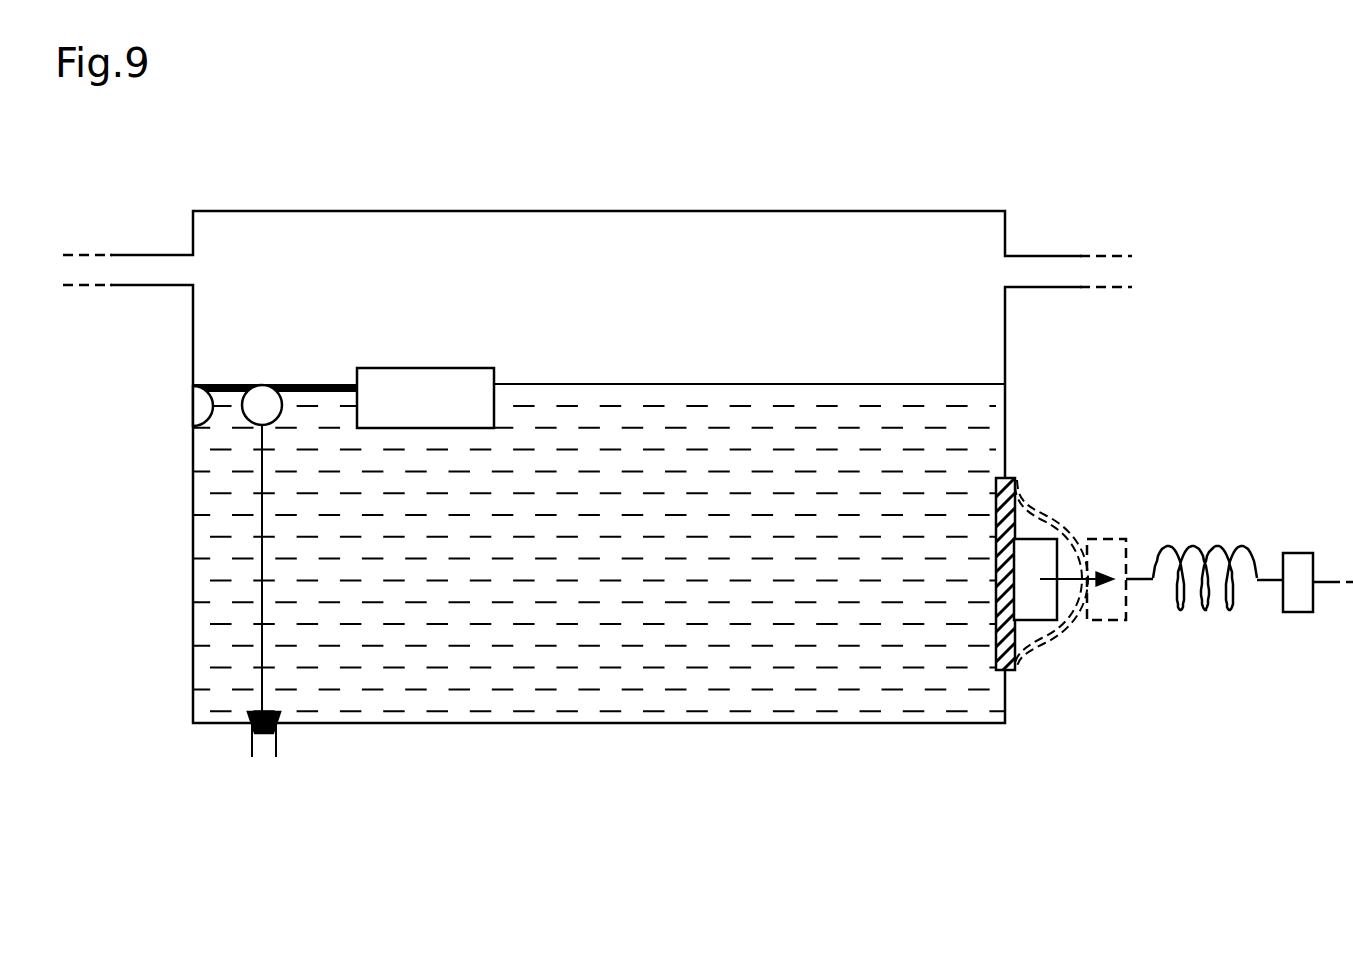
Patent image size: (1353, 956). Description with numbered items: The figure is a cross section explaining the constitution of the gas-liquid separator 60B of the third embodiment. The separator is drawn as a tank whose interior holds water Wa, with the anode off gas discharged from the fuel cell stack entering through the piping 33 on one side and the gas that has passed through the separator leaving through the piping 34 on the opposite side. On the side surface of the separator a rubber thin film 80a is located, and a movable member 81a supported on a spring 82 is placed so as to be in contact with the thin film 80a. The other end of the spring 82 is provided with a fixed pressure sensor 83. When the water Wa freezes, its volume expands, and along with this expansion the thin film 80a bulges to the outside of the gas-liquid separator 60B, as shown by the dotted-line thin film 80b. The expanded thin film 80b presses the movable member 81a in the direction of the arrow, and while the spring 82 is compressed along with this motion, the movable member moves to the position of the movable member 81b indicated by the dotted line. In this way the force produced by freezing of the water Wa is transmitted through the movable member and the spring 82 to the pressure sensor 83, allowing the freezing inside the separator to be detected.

The gas-liquid separator 60B is at (263, 197).
The piping 33 is at (134, 286).
The piping 34 is at (1107, 288).
The water Wa is at (933, 444).
The rubber thin film 80a is at (1010, 672).
The thin film 80b is at (1050, 640).
The movable member 81a is at (1035, 538).
The movable member 81b is at (1117, 539).
The spring 82 is at (1230, 612).
The pressure sensor 83 is at (1300, 612).